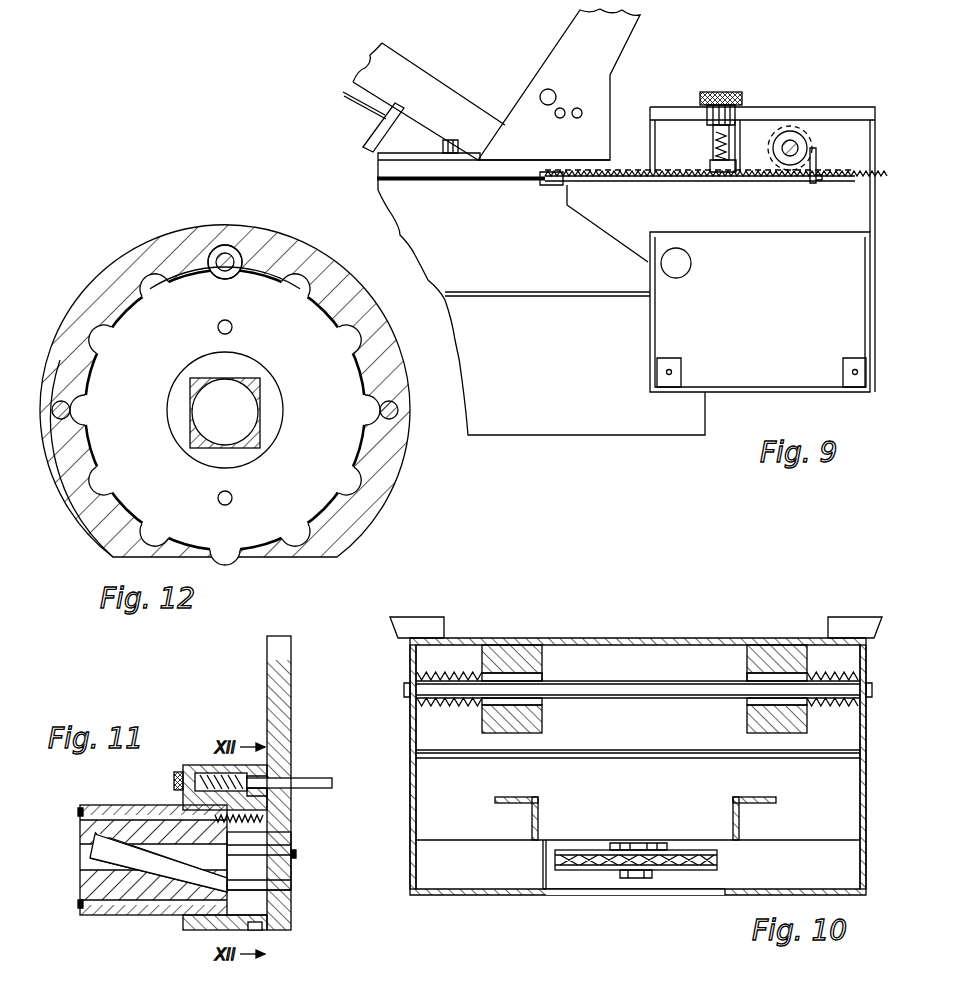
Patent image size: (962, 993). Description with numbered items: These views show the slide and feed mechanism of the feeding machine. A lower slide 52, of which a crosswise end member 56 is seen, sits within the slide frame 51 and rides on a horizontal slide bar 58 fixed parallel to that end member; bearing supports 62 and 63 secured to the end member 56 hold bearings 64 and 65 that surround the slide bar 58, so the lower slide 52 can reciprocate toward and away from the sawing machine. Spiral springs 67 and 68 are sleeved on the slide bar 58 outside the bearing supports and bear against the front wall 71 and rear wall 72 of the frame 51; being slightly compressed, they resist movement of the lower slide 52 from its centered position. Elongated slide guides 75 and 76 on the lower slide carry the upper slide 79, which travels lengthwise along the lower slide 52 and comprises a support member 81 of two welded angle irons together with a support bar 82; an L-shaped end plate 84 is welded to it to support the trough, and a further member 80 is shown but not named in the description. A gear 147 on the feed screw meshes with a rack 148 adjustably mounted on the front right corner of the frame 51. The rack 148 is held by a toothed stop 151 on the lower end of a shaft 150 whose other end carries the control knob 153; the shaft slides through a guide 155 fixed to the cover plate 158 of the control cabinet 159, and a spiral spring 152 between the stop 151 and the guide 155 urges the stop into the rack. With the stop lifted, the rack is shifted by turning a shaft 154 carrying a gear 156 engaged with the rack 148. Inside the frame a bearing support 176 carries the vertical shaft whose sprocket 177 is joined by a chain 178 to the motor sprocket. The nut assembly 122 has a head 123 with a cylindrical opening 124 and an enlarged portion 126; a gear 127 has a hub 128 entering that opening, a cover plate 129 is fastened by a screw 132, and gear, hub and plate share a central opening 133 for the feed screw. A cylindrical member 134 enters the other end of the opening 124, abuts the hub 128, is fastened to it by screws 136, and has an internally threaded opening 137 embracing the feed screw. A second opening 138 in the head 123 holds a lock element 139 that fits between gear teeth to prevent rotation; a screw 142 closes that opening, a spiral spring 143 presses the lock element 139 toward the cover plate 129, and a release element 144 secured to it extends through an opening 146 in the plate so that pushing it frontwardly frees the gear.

In FIG. 9, the slide frame 51 is at (572, 437).
In FIG. 10, the slide frame 51 is at (858, 897).
In FIG. 9, the lower slide 52 is at (385, 192).
In FIG. 10, the lower slide 52 is at (830, 752).
In FIG. 10, the crosswise end member 56 is at (640, 655).
In FIG. 10, the horizontal slide bar 58 is at (622, 697).
In FIG. 10, the bearing support 62 is at (765, 650).
In FIG. 10, the bearing support 63 is at (505, 650).
In FIG. 10, the bearing 64 is at (750, 676).
In FIG. 10, the bearing 65 is at (542, 680).
In FIG. 10, the spiral spring 67 is at (842, 672).
In FIG. 10, the spiral spring 68 is at (435, 672).
In FIG. 10, the front wall 71 is at (860, 715).
In FIG. 10, the rear wall 72 is at (410, 726).
In FIG. 10, the slide guide 75 is at (840, 625).
In FIG. 10, the slide guide 76 is at (418, 625).
In FIG. 9, the upper slide 79 is at (355, 144).
In FIG. 9, the upright member 80 is at (552, 58).
In FIG. 9, the support member 81 is at (370, 117).
In FIG. 9, the support bar 82 is at (455, 140).
In FIG. 9, the L-shaped end plate 84 is at (415, 72).
In FIG. 12, the nut assembly 122 is at (75, 540).
In FIG. 11, the nut assembly 122 is at (307, 880).
In FIG. 12, the head 123 is at (222, 237).
In FIG. 11, the head 123 is at (183, 925).
In FIG. 11, the cylindrical opening 124 is at (183, 803).
In FIG. 12, the enlarged portion 126 is at (132, 308).
In FIG. 11, the enlarged portion 126 is at (275, 807).
In FIG. 12, the gear 127 is at (95, 372).
In FIG. 11, the gear 127 is at (258, 930).
In FIG. 11, the hub 128 is at (240, 915).
In FIG. 11, the cover plate 129 is at (290, 778).
In FIG. 12, the screw 132 is at (70, 412).
In FIG. 11, the screw 132 is at (296, 852).
In FIG. 12, the central opening 133 is at (212, 368).
In FIG. 11, the central opening 133 is at (290, 840).
In FIG. 11, the cylindrical member 134 is at (140, 808).
In FIG. 12, the hole 136 is at (232, 327).
In FIG. 11, the hole 136 is at (80, 810).
In FIG. 12, the internally threaded opening 137 is at (200, 400).
In FIG. 11, the internally threaded opening 137 is at (95, 845).
In FIG. 12, the second opening 138 is at (215, 258).
In FIG. 11, the second opening 138 is at (205, 790).
In FIG. 12, the lock element 139 is at (248, 250).
In FIG. 11, the lock element 139 is at (258, 776).
In FIG. 11, the screw 142 is at (178, 772).
In FIG. 11, the spiral spring 143 is at (210, 775).
In FIG. 12, the release element 144 is at (235, 278).
In FIG. 11, the release element 144 is at (325, 783).
In FIG. 11, the opening 146 is at (275, 792).
In FIG. 9, the gear 147 is at (548, 168).
In FIG. 9, the rack 148 is at (552, 185).
In FIG. 9, the shaft 150 is at (715, 147).
In FIG. 9, the toothed stop 151 is at (712, 174).
In FIG. 9, the spiral spring 152 is at (716, 140).
In FIG. 9, the control knob 153 is at (723, 92).
In FIG. 9, the shaft 154 is at (800, 143).
In FIG. 9, the guide 155 is at (738, 130).
In FIG. 9, the gear 156 is at (812, 170).
In FIG. 9, the cover plate 158 is at (832, 120).
In FIG. 9, the control cabinet 159 is at (822, 395).
In FIG. 10, the bearing support 176 is at (746, 842).
In FIG. 10, the sprocket 177 is at (628, 845).
In FIG. 10, the chain 178 is at (717, 863).